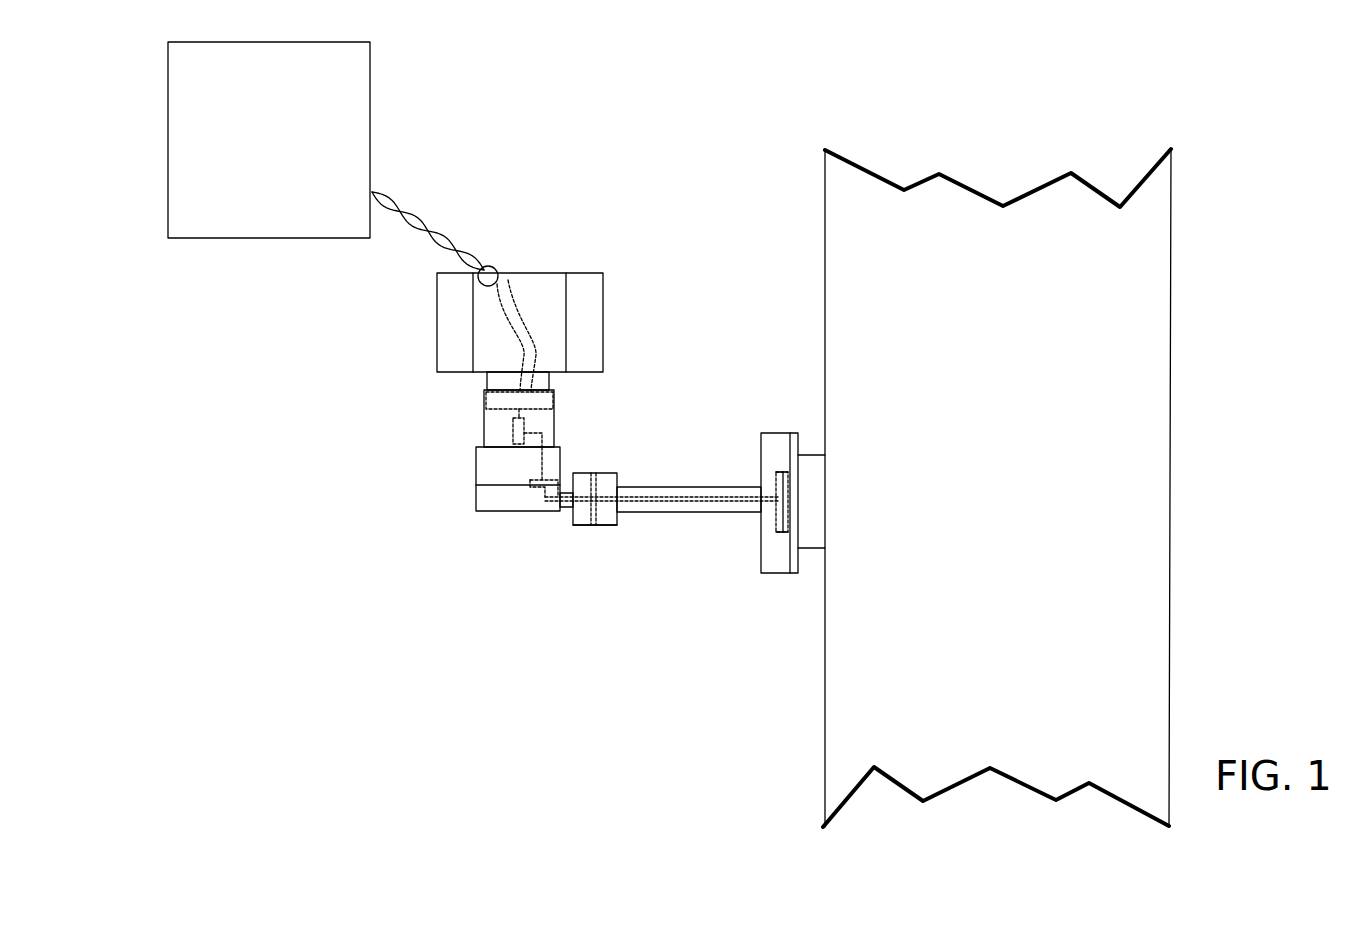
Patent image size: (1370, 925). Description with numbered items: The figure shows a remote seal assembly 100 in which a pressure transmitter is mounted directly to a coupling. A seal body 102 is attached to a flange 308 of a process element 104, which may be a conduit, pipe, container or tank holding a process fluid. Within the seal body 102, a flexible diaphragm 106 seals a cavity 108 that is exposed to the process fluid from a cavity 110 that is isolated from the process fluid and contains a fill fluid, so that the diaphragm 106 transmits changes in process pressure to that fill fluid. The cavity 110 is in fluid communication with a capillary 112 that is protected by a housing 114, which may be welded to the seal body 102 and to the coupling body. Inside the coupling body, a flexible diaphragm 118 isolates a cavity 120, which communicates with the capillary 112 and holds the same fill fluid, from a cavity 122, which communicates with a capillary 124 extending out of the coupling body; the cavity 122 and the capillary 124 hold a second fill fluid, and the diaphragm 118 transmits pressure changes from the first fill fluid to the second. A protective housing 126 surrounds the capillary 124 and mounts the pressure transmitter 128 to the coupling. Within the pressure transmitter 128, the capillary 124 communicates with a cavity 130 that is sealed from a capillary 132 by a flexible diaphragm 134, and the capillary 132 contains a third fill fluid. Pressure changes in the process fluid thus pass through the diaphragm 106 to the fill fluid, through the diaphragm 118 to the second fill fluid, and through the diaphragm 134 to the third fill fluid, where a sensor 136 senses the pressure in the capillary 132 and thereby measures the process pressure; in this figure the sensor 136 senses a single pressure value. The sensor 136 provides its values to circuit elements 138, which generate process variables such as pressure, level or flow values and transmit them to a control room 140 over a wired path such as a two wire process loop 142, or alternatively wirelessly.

The remote seal assembly 100 is at (711, 316).
The seal body 102 is at (768, 433).
The process element 104 is at (1053, 332).
The flexible diaphragm 106 is at (786, 505).
The cavity 108 is at (788, 525).
The cavity 110 is at (782, 532).
The capillary 112 is at (652, 488).
The housing 114 is at (655, 514).
The flexible diaphragm 118 is at (592, 482).
The cavity 120 is at (598, 527).
The cavity 122 is at (592, 487).
The capillary 124 is at (545, 500).
The protective housing 126 is at (571, 510).
The pressure transmitter 128 is at (450, 502).
The cavity 130 is at (538, 490).
The capillary 132 is at (542, 460).
The flexible diaphragm 134 is at (537, 483).
The sensor 136 is at (513, 420).
The circuit elements 138 is at (487, 394).
The control room 140 is at (354, 82).
The two wire process loop 142 is at (431, 228).
The flange 308 is at (795, 433).